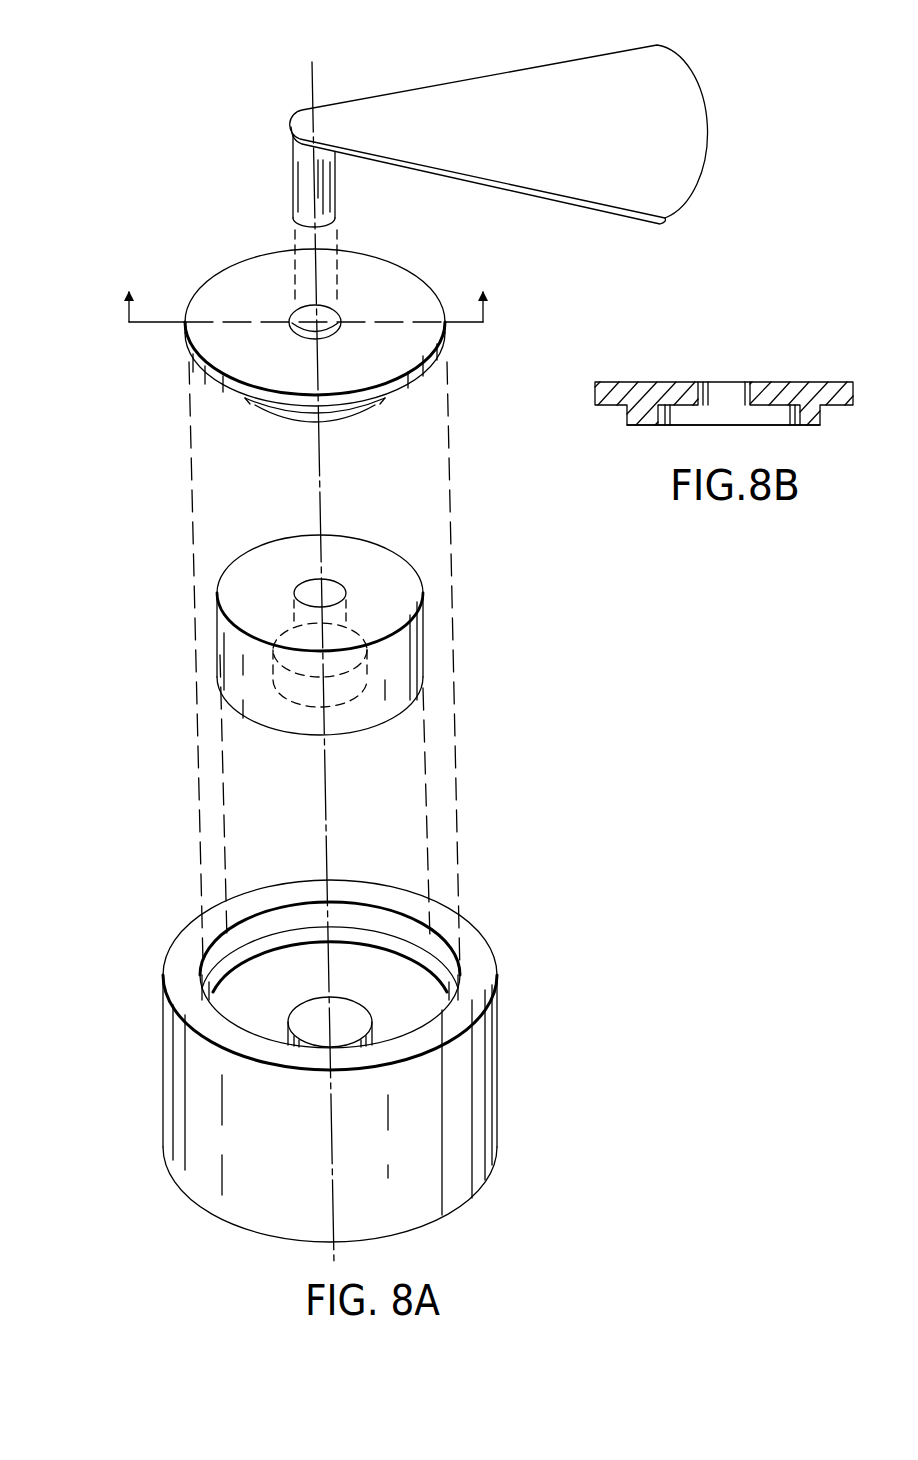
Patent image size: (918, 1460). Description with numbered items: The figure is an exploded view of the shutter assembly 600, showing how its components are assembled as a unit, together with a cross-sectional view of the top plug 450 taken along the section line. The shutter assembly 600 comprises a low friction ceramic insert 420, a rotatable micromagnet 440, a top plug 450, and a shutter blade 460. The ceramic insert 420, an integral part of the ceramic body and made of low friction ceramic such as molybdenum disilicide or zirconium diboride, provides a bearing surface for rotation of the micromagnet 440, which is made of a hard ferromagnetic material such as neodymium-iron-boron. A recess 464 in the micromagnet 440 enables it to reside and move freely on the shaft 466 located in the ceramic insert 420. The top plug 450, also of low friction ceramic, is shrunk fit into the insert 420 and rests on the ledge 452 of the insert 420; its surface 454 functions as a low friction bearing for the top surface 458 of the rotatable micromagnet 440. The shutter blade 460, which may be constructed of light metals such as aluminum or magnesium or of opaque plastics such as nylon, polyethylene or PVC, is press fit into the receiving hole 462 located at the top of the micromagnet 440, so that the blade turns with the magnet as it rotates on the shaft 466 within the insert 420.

In FIG. 8A, the shutter assembly 600 is at (272, 94).
In FIG. 8A, the shutter blade 460 is at (678, 178).
In FIG. 8A, the top plug 450 is at (200, 347).
In FIG. 8B, the top plug 450 is at (826, 382).
In FIG. 8A, the surface of plug 454 is at (258, 412).
In FIG. 8B, the surface of plug 454 is at (655, 425).
In FIG. 8A, the rotatable micromagnet 440 is at (410, 644).
In FIG. 8A, the top surface of micromagnet 458 is at (268, 558).
In FIG. 8A, the receiving hole 462 is at (332, 580).
In FIG. 8A, the recess 464 is at (368, 673).
In FIG. 8A, the ceramic insert 420 is at (483, 1118).
In FIG. 8A, the ledge 452 is at (221, 984).
In FIG. 8A, the shaft 466 is at (373, 1020).